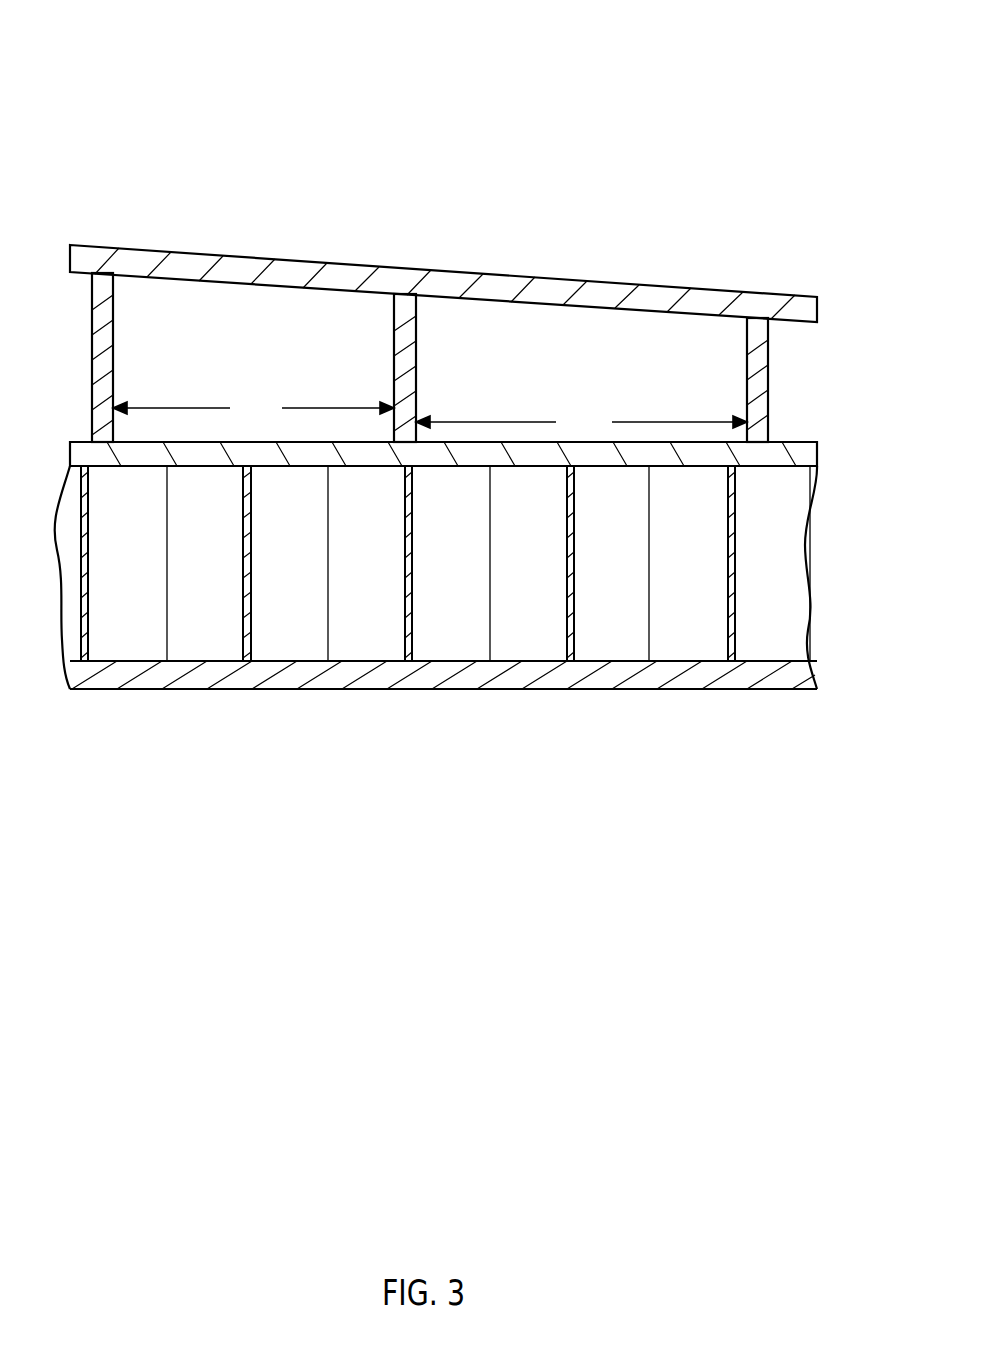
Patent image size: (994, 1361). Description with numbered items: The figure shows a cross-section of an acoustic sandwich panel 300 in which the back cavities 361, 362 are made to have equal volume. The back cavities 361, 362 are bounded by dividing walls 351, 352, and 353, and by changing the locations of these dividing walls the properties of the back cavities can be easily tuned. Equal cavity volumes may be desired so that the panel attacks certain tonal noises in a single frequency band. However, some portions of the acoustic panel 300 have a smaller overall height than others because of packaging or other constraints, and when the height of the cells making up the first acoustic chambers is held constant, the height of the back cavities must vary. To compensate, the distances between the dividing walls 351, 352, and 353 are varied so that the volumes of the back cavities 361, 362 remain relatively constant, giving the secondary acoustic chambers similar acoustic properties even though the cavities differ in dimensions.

The acoustic sandwich panel 300 is at (687, 103).
The dividing wall 351 is at (115, 348).
The dividing wall 352 is at (393, 348).
The dividing wall 353 is at (747, 368).
The back cavity 361 is at (273, 352).
The back cavity 362 is at (611, 366).